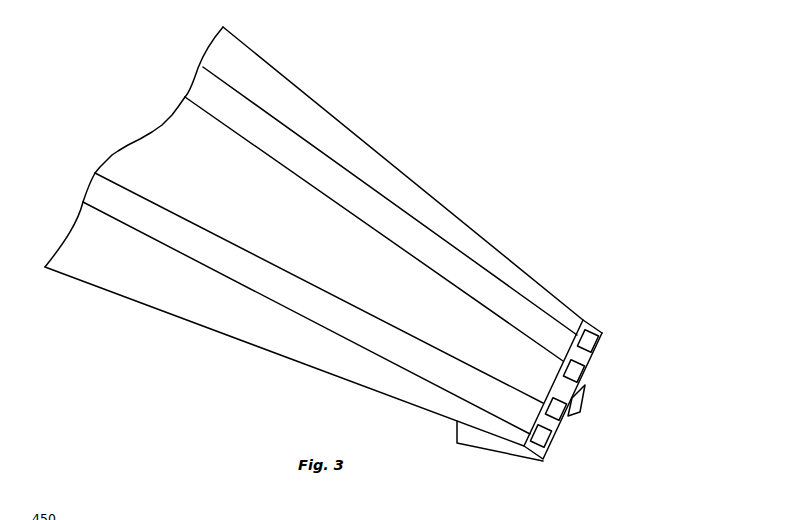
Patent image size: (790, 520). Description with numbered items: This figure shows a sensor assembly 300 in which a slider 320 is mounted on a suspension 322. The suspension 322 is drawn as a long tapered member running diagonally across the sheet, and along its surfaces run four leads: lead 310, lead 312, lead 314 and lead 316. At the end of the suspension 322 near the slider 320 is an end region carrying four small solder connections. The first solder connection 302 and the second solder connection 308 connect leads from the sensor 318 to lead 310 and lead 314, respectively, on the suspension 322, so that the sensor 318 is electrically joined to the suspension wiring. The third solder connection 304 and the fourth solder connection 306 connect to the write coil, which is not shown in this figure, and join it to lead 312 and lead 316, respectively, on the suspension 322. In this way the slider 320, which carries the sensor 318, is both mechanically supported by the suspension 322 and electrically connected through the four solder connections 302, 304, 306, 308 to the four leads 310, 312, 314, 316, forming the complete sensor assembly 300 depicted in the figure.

The sensor assembly 300 is at (370, 272).
The first solder connection 302 is at (604, 417).
The third solder connection 304 is at (558, 421).
The fourth solder connection 306 is at (574, 370).
The second solder connection 308 is at (602, 334).
The lead 310 is at (282, 298).
The lead 312 is at (407, 329).
The lead 314 is at (458, 249).
The lead 316 is at (505, 321).
The sensor 318 is at (580, 396).
The slider 320 is at (485, 442).
The suspension 322 is at (398, 396).